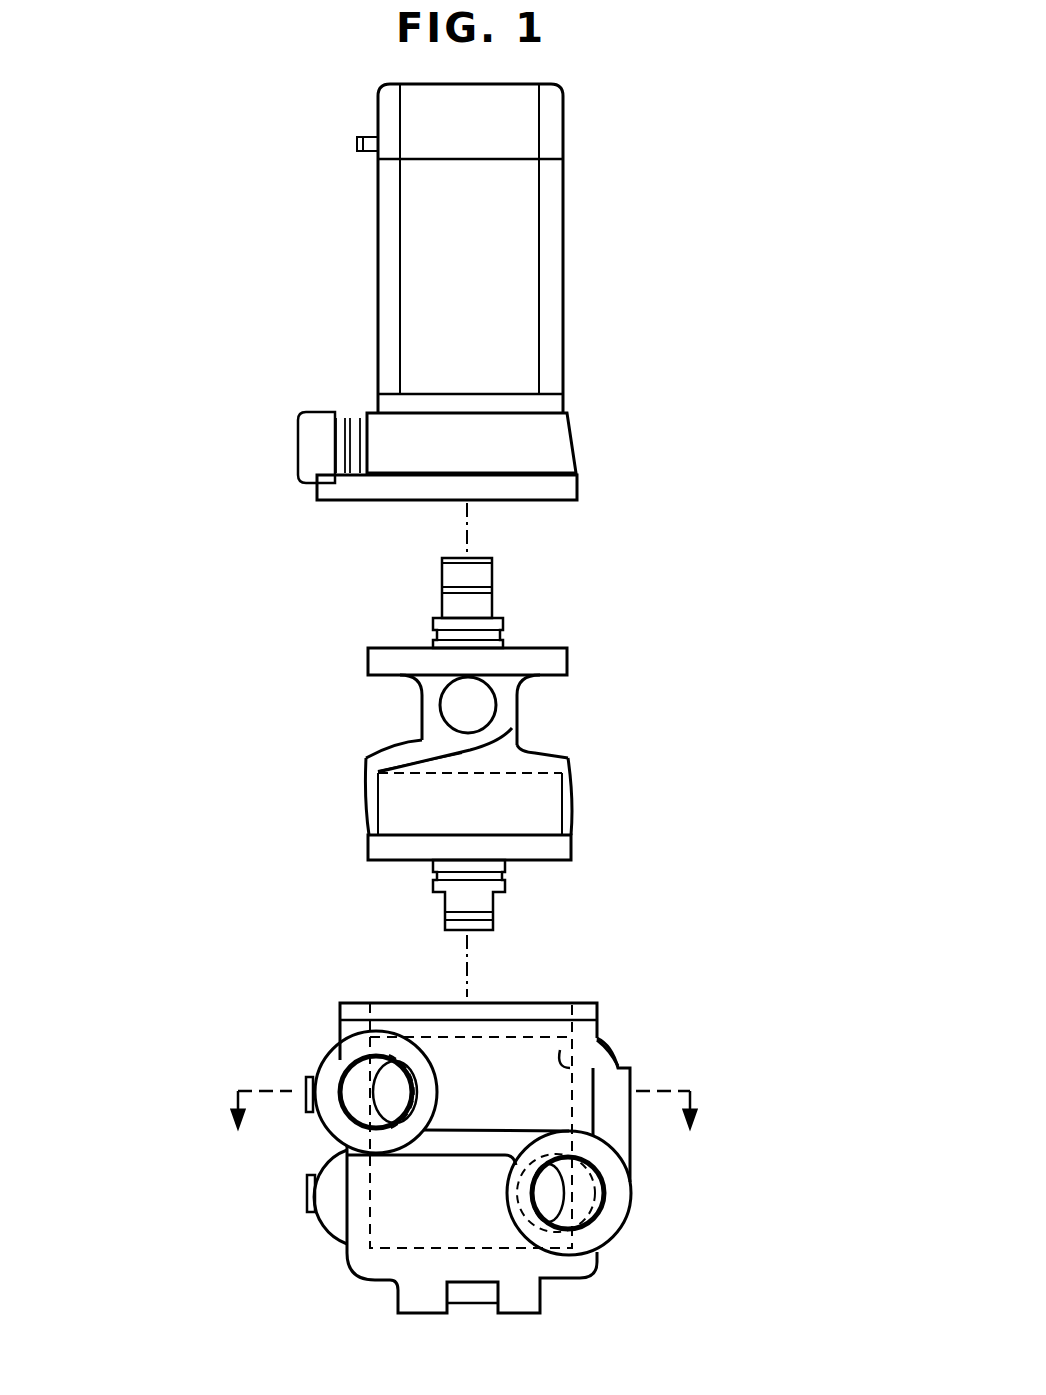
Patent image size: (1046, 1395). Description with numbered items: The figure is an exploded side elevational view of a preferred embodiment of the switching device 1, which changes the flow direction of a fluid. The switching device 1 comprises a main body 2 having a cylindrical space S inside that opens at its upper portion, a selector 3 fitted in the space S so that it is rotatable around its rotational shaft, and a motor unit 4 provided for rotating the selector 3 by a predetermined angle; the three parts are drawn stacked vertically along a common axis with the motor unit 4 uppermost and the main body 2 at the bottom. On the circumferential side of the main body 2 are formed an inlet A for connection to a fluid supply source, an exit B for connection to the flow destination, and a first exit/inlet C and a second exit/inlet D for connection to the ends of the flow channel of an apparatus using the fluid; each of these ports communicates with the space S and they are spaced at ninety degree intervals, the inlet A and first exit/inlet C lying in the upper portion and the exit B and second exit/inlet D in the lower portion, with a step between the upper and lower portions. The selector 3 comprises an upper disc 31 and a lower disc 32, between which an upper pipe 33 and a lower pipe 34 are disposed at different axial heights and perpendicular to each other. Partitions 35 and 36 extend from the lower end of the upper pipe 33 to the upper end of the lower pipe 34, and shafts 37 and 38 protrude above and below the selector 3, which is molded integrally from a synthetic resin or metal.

The switching device 1 is at (680, 754).
The main body 2 is at (467, 1143).
The selector 3 is at (471, 744).
The motor unit 4 is at (563, 318).
The upper disc 31 is at (368, 665).
The lower disc 32 is at (368, 853).
The upper pipe 33 is at (517, 700).
The lower pipe 34 is at (572, 800).
The partition 35 is at (560, 745).
The partition 36 is at (380, 748).
The shaft 37 is at (493, 605).
The shaft 38 is at (493, 906).
The inlet A is at (342, 1085).
The exit B is at (586, 1215).
The first exit/inlet C is at (617, 1058).
The second exit/inlet D is at (320, 1230).
The space S is at (560, 1060).